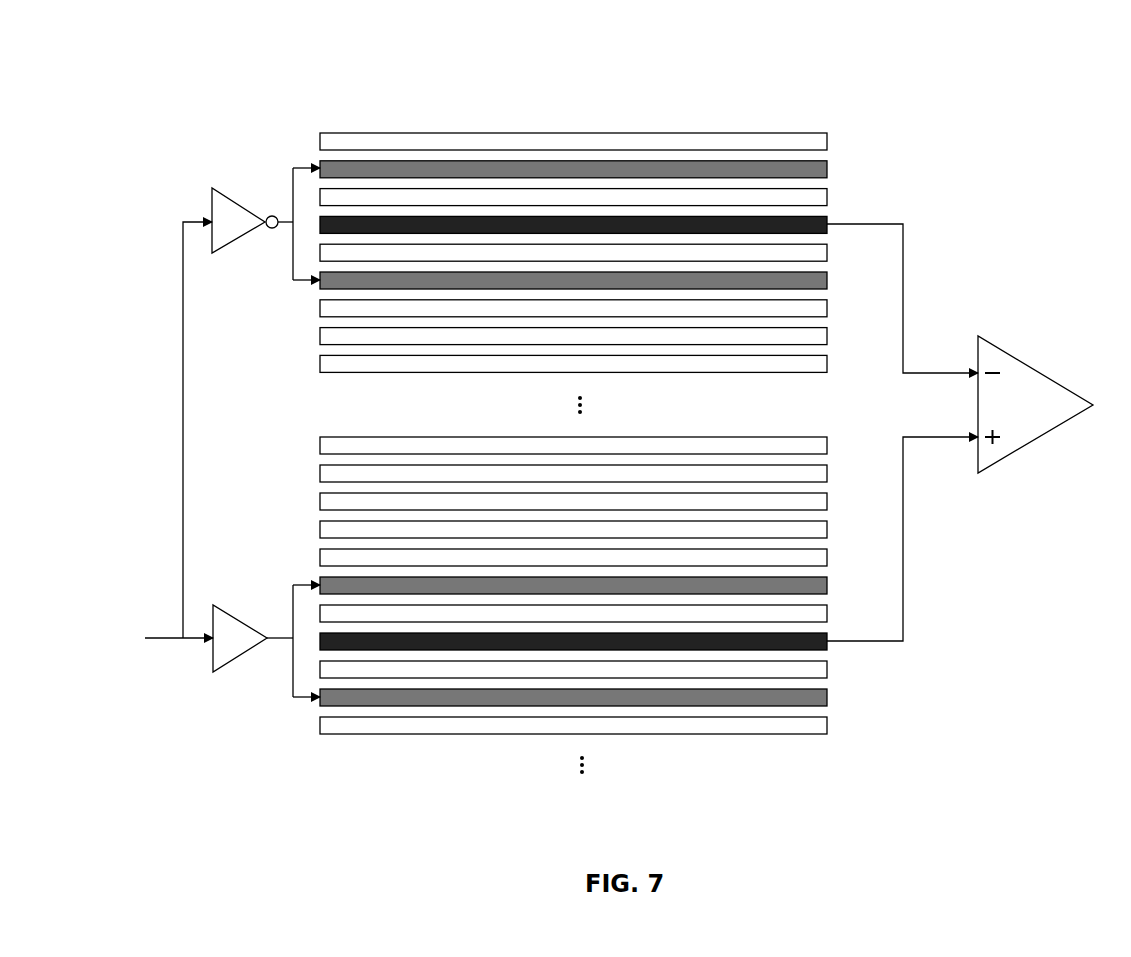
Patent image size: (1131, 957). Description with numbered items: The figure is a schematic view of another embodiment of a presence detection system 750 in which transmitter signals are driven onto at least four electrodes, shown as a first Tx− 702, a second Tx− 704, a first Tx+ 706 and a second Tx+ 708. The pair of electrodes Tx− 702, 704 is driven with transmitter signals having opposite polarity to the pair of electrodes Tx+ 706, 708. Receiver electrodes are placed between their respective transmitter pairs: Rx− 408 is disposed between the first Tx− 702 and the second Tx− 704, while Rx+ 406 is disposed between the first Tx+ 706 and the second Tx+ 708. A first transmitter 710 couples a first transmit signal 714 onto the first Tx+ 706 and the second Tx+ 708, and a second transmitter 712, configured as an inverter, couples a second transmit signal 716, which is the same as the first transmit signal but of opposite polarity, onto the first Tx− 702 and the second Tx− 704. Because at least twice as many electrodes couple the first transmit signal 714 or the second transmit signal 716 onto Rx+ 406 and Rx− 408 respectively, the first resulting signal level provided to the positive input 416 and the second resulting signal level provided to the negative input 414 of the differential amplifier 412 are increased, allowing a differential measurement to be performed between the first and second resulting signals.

The presence detection system 750 is at (1018, 98).
The first Tx− electrode 702 is at (615, 135).
The Rx− electrode 408 is at (623, 195).
The second Tx− electrode 704 is at (607, 313).
The first Tx+ electrode 706 is at (616, 560).
The Rx+ electrode 406 is at (616, 620).
The second Tx+ electrode 708 is at (616, 682).
The second transmitter 712 is at (266, 191).
The first transmitter 710 is at (266, 675).
The second transmit signal 716 is at (162, 400).
The first transmit signal 714 is at (196, 585).
The negative input 414 is at (908, 298).
The positive input 416 is at (917, 539).
The differential amplifier 412 is at (1047, 381).